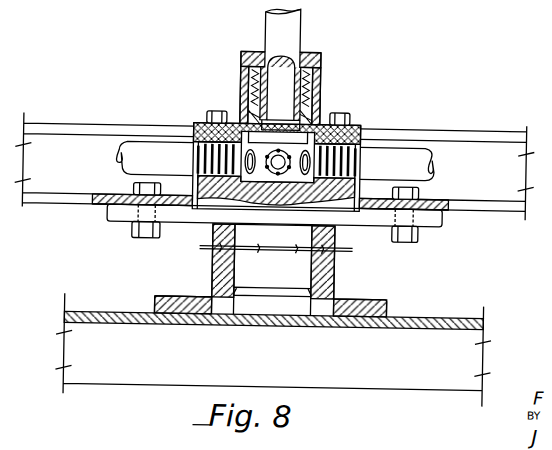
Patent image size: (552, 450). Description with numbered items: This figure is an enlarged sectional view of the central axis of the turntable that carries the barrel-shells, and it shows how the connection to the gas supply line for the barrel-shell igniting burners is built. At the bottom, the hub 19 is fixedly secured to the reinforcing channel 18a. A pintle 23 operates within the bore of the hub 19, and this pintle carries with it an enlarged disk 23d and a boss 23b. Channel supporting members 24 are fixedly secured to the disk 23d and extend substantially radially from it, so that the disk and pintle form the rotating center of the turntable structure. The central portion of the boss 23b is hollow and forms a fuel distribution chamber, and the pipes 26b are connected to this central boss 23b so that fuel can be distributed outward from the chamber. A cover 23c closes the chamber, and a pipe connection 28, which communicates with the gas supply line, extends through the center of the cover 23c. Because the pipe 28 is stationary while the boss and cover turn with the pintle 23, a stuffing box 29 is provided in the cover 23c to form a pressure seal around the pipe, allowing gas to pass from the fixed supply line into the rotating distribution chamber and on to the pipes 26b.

The channel supporting members 24 is at (81, 126).
The pipes 26b is at (143, 149).
The pipe connection 28 is at (297, 24).
The stuffing box 29 is at (317, 72).
The cover 23c is at (315, 99).
The boss 23b is at (372, 128).
The disk 23d is at (430, 220).
The pintle 23 is at (248, 258).
The hub 19 is at (335, 286).
The reinforcing channel 18a is at (433, 315).